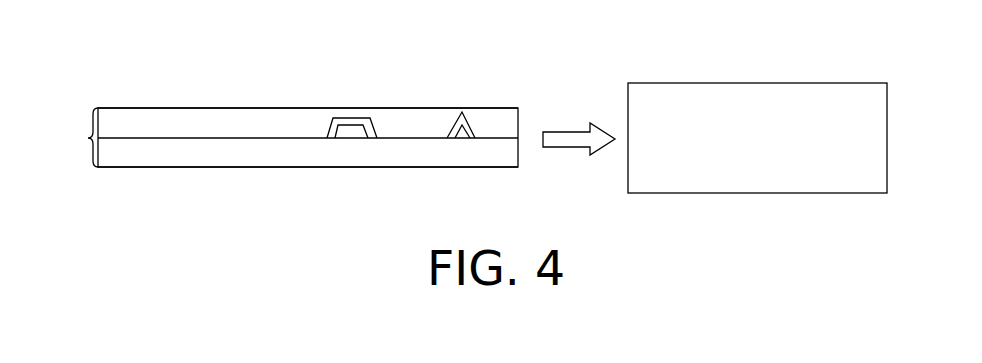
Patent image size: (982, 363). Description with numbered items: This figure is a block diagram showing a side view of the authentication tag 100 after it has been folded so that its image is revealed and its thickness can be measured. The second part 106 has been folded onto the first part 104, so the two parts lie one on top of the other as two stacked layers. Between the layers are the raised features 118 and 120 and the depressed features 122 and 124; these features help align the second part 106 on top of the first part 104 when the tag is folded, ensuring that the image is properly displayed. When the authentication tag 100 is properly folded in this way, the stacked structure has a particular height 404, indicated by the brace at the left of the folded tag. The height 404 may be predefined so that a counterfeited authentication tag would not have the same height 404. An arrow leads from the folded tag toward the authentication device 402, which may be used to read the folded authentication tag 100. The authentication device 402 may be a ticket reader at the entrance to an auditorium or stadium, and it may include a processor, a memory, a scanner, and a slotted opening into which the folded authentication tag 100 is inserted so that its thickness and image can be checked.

The authentication tag 100 is at (133, 78).
The first part 104 is at (240, 168).
The second part 106 is at (205, 117).
The raised feature 118 is at (463, 138).
The raised feature 120 is at (350, 138).
The depressed feature 122 is at (465, 120).
The depressed feature 124 is at (350, 118).
The authentication device 402 is at (757, 83).
The height 404 is at (87, 138).